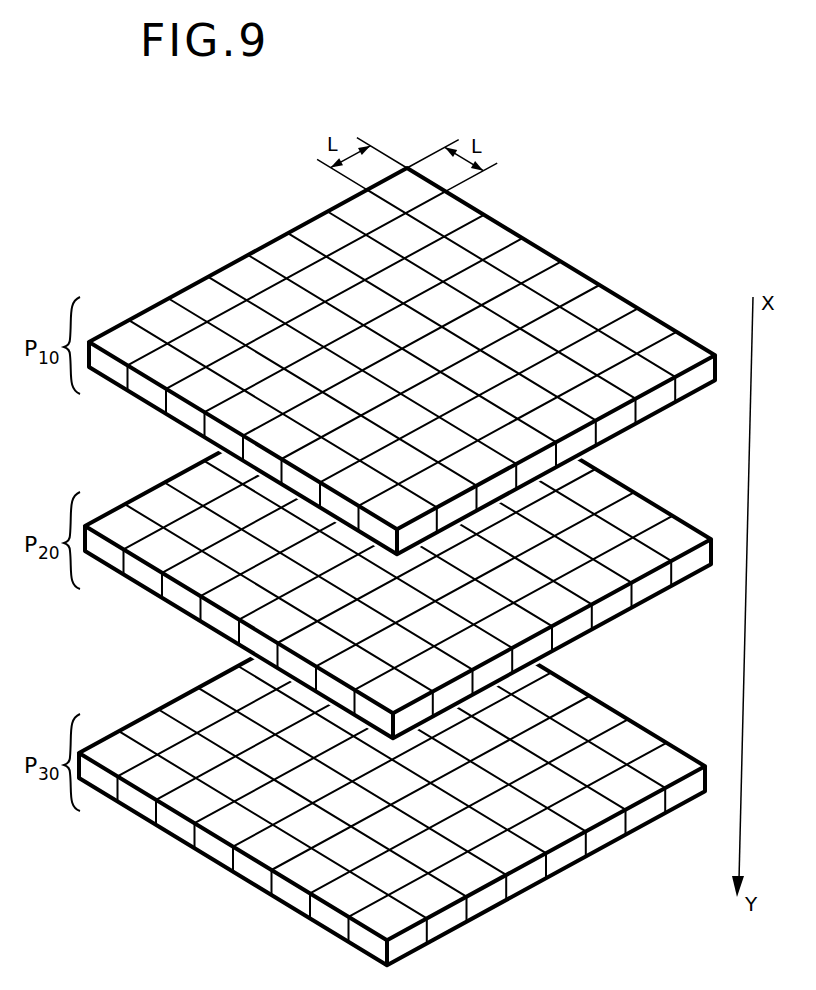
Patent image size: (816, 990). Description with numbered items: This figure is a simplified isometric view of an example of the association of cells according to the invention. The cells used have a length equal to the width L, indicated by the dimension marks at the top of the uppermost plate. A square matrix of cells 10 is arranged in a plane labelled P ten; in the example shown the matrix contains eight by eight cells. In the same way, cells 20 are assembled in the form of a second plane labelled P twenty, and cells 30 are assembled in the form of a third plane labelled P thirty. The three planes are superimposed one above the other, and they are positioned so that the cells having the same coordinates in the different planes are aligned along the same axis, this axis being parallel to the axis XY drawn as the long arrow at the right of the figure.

The cells 10 is at (155, 325).
The cells 20 is at (162, 502).
The cells 30 is at (150, 733).